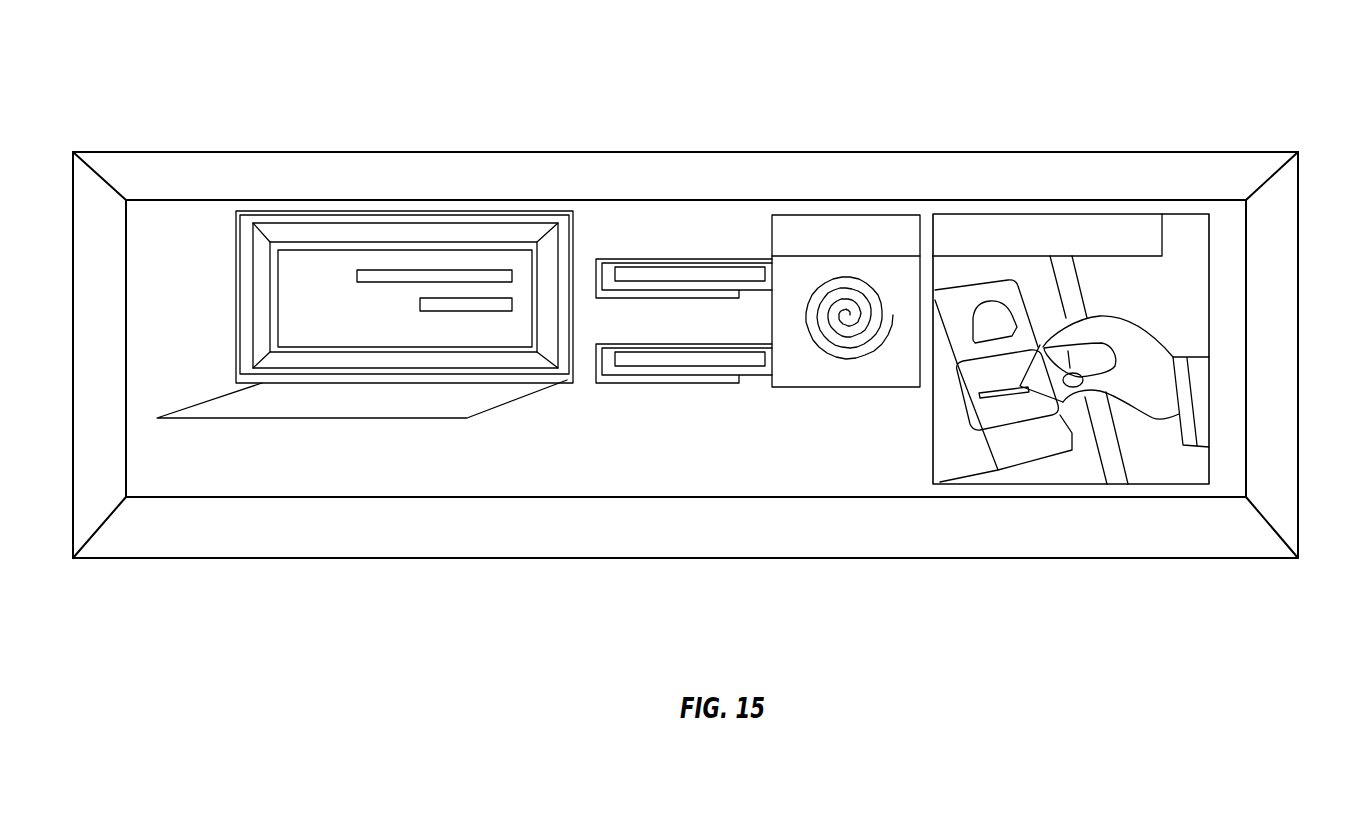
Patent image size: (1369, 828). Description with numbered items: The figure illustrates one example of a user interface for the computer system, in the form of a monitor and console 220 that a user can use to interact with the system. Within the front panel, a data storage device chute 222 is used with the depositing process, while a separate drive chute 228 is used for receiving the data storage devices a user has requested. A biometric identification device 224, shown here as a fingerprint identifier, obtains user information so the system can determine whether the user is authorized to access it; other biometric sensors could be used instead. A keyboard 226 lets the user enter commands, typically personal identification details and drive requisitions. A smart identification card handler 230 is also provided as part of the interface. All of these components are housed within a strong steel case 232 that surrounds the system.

The monitor and console 220 is at (1024, 60).
The data storage device chute 222 is at (600, 257).
The biometric identification device 224 is at (815, 378).
The keyboard 226 is at (365, 403).
The drive chute 228 is at (640, 363).
The smart identification card handler 230 is at (1182, 312).
The strong case 232 is at (1155, 168).